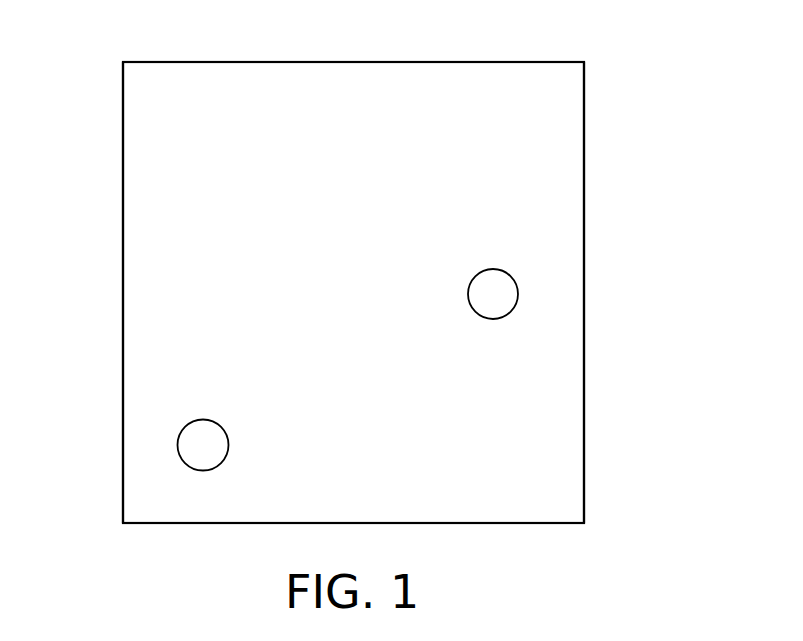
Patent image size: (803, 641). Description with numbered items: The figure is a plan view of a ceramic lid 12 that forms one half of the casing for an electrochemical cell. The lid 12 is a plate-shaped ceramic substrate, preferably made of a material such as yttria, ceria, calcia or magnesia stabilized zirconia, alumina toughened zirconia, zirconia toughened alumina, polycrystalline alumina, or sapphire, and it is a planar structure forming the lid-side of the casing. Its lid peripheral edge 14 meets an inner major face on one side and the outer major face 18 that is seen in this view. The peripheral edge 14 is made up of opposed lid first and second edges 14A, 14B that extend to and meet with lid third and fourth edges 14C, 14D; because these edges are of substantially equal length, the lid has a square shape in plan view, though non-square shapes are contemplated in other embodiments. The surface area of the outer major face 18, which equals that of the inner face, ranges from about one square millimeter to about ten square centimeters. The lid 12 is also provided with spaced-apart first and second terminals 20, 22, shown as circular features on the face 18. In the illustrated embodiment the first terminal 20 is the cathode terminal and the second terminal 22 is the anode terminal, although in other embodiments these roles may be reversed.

The ceramic lid 12 is at (677, 162).
The lid peripheral edge 14 is at (123, 162).
The lid first edge 14A is at (202, 62).
The lid second edge 14B is at (518, 523).
The lid third edge 14C is at (584, 386).
The lid fourth edge 14D is at (123, 510).
The outer major face 18 is at (170, 300).
The first terminal 20 is at (518, 294).
The second terminal 22 is at (177, 445).